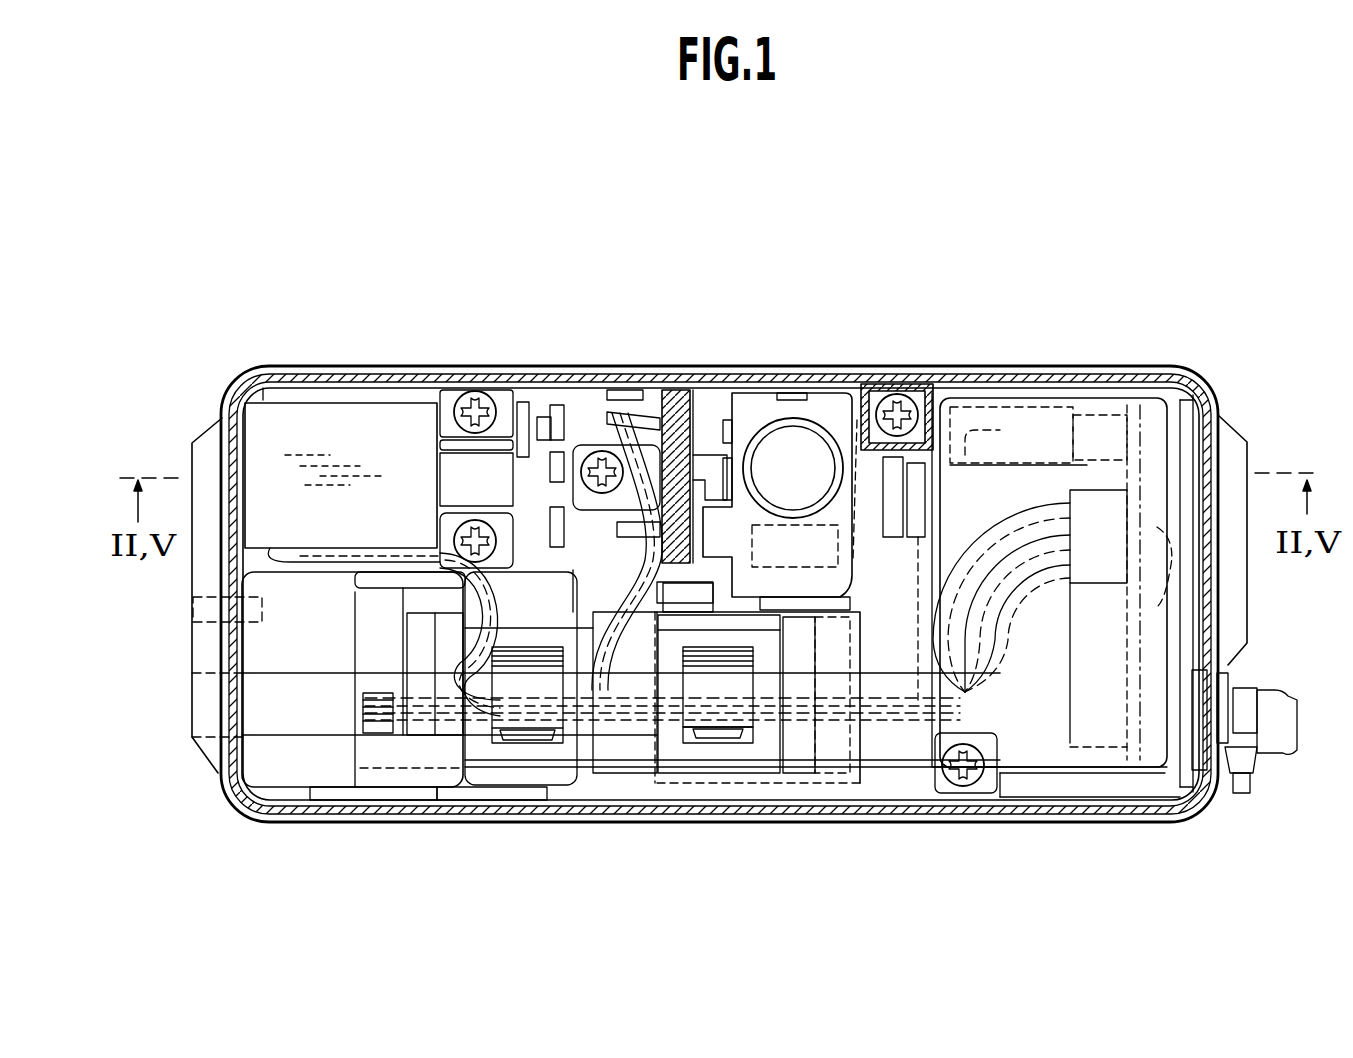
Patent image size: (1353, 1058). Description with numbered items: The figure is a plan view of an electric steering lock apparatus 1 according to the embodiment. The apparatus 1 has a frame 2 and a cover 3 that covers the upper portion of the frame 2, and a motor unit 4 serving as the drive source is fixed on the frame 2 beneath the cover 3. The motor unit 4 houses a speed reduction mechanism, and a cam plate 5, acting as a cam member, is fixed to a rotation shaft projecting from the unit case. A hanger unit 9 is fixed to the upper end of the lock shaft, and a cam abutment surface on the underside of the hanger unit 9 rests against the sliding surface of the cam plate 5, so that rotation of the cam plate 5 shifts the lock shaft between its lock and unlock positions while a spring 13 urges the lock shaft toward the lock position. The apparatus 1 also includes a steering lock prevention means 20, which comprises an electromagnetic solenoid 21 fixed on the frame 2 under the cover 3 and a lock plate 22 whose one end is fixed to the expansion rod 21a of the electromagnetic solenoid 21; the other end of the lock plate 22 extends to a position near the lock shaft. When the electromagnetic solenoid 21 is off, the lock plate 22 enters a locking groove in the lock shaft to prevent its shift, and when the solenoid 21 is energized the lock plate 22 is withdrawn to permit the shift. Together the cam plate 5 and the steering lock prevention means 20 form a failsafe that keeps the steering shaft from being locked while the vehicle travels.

The electric steering lock apparatus 1 is at (350, 332).
The frame 2 is at (203, 705).
The cover 3 is at (225, 443).
The motor unit 4 is at (752, 787).
The cam plate 5 is at (847, 397).
The hanger unit 9 is at (828, 408).
The spring 13 is at (757, 420).
The steering lock prevention means 20 is at (394, 400).
The electromagnetic solenoid 21 is at (293, 427).
The expansion rod 21a is at (493, 465).
The lock plate 22 is at (710, 460).